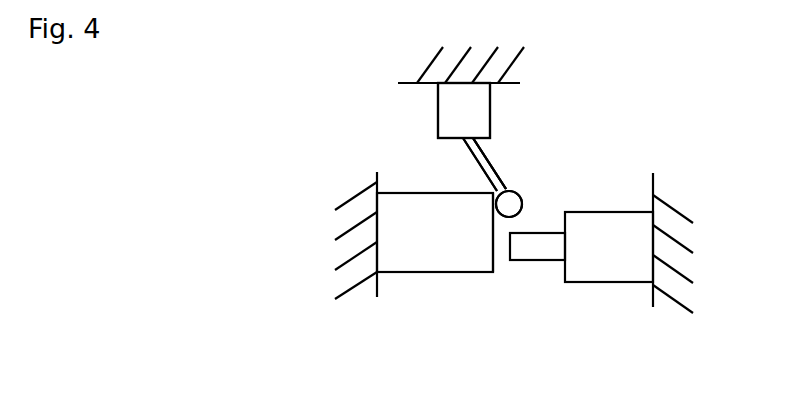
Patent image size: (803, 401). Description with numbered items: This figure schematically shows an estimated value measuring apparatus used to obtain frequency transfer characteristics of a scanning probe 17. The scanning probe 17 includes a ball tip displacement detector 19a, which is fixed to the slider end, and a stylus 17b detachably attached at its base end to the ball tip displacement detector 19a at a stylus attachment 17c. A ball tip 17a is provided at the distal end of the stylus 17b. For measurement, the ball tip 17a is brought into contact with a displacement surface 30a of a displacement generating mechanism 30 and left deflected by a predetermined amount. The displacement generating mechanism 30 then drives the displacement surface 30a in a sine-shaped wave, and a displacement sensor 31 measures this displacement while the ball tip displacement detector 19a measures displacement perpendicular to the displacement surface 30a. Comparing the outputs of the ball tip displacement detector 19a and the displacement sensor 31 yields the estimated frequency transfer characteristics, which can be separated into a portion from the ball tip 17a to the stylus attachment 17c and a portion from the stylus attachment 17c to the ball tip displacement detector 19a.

The scanning probe 17 is at (338, 147).
The ball tip 17a is at (514, 203).
The stylus 17b is at (462, 158).
The stylus attachment 17c is at (471, 149).
The ball tip displacement detector 19a is at (444, 101).
The displacement generating mechanism 30 is at (435, 260).
The displacement surface 30a is at (493, 257).
The displacement sensor 31 is at (600, 267).